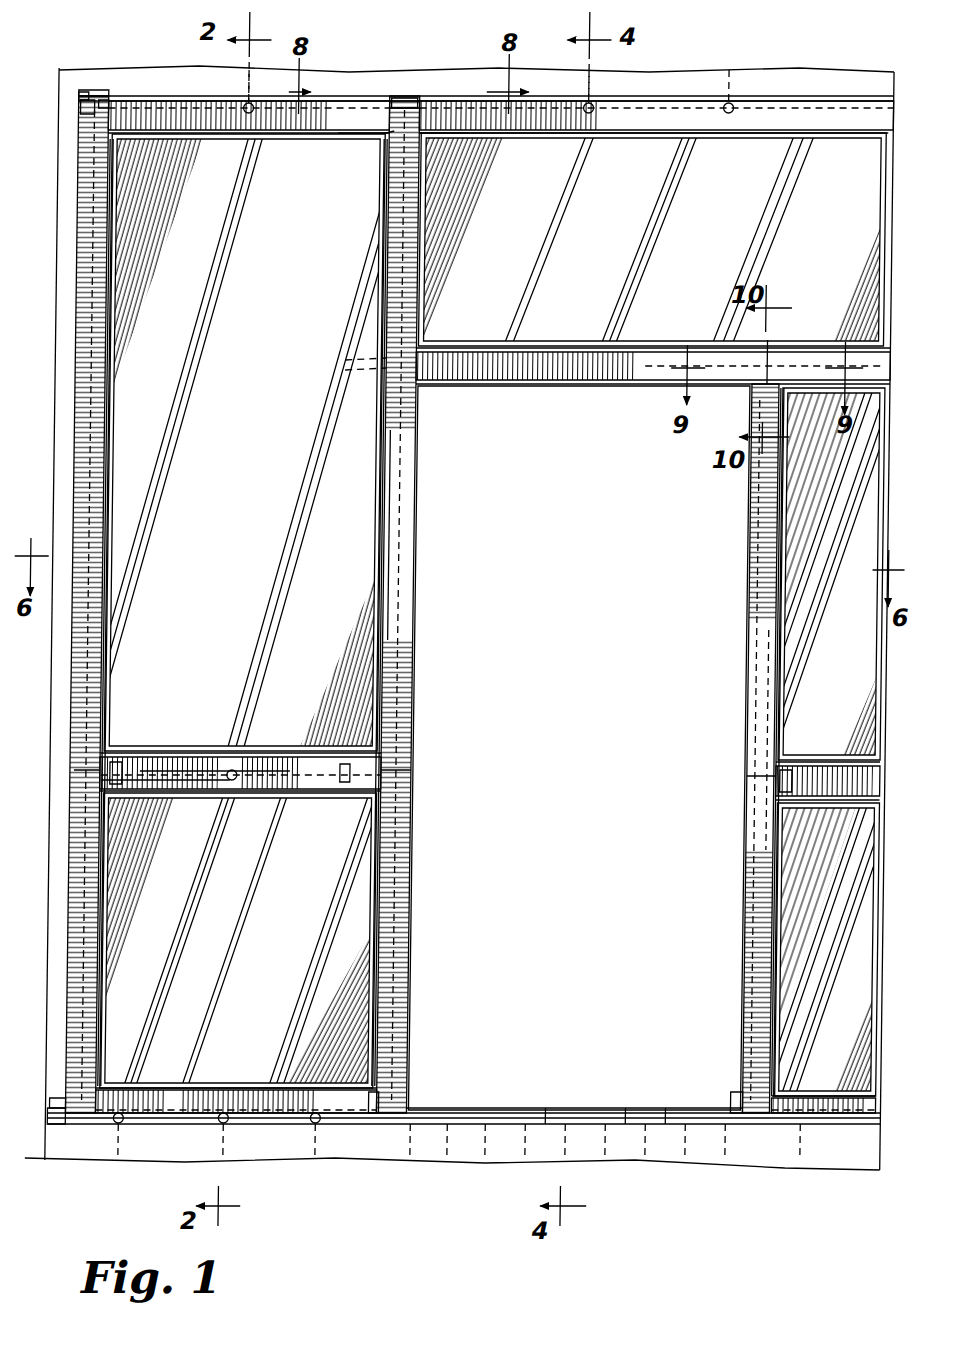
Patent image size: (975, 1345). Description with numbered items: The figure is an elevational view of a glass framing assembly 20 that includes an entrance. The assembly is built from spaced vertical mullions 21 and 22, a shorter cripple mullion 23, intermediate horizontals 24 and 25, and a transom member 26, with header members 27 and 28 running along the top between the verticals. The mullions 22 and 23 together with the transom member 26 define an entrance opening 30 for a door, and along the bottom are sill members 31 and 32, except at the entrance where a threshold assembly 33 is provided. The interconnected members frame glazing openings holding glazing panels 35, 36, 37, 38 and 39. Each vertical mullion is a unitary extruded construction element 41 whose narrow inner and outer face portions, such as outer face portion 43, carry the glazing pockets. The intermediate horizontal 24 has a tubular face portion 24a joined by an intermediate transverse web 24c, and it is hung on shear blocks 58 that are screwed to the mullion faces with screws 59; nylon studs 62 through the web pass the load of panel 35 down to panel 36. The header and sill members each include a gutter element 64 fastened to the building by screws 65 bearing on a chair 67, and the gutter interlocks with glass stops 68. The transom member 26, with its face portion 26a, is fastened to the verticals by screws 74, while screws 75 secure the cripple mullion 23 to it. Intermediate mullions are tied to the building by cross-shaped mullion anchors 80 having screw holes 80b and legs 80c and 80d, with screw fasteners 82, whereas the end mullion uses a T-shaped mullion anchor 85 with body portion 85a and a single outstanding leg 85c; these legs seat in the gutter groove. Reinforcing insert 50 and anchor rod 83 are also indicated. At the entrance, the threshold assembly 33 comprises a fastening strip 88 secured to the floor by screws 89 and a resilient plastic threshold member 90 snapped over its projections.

The glass framing assembly 20 is at (359, 1240).
The vertical mullion 21 is at (78, 687).
The vertical mullion 22 is at (425, 620).
The cripple mullion 23 is at (757, 630).
The intermediate horizontal 24 is at (300, 792).
The tubular face portion 24a is at (245, 791).
The intermediate transverse web 24c is at (236, 757).
The intermediate horizontal 25 is at (878, 801).
The transom member 26 is at (530, 385).
The face portion 26a is at (600, 384).
The header member 27 is at (272, 131).
The header member 28 is at (748, 131).
The entrance opening 30 is at (579, 616).
The sill member 31 is at (280, 1090).
The sill member 32 is at (855, 1098).
The threshold assembly 33 is at (512, 1110).
The glazing panel 35 is at (268, 438).
The glazing panel 36 is at (239, 930).
The glazing panel 37 is at (625, 238).
The glazing panel 38 is at (875, 618).
The glazing panel 39 is at (880, 958).
The unitary extruded construction element 41 is at (421, 497).
The outer face portion 43 is at (405, 528).
The reinforcing insert 50 is at (395, 232).
The shear block 58 is at (128, 760).
The screw 59 is at (84, 771).
The nylon stud 62 is at (250, 770).
The gutter element 64 is at (325, 96).
The screw 65 is at (253, 100).
The fastening block or chair 67 is at (245, 100).
The glass stop 68 is at (250, 138).
The screw 74 is at (350, 365).
The screw 75 is at (774, 348).
The mullion anchor 80 is at (405, 100).
The screw hole 80b is at (390, 136).
The leg 80c is at (352, 135).
The leg 80d is at (495, 136).
The screw fastener 82 is at (82, 110).
The anchor rod 83 is at (160, 100).
The mullion anchor 85 is at (100, 90).
The body portion 85a is at (84, 92).
The outstanding leg 85c is at (124, 100).
The fastening block or strip 88 is at (565, 1110).
The screw 89 is at (333, 1150).
The threshold member 90 is at (654, 1105).